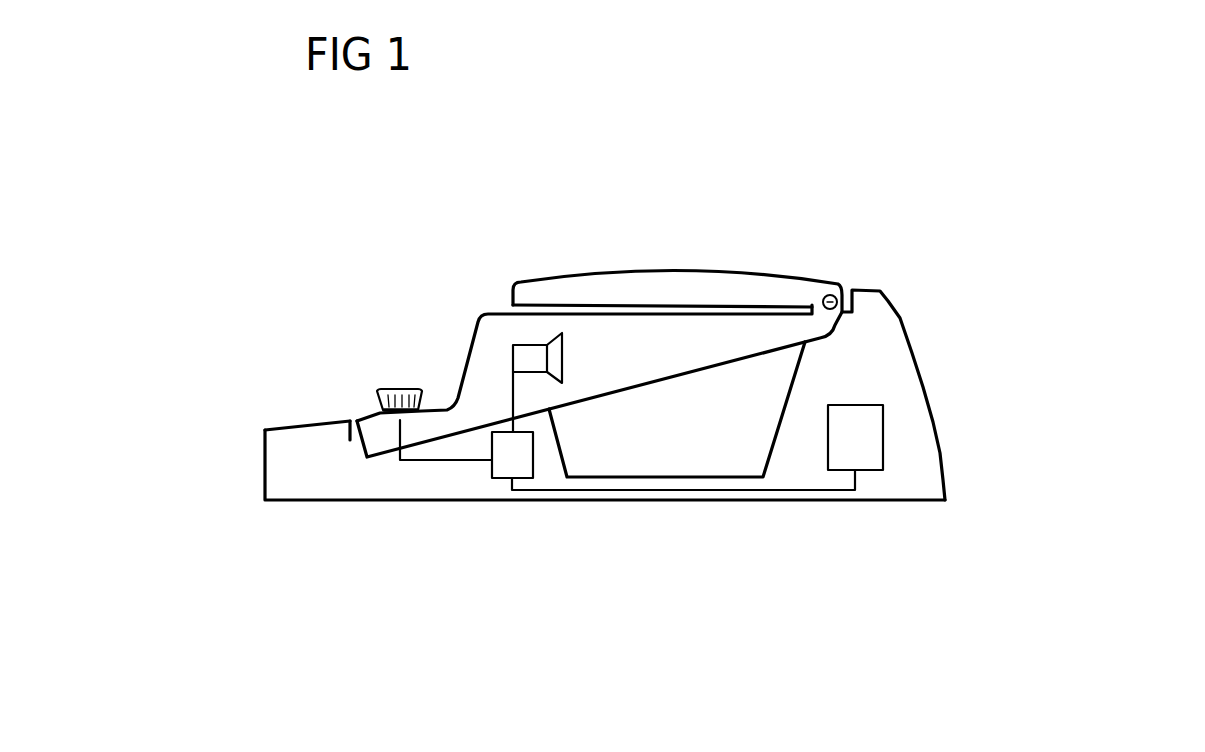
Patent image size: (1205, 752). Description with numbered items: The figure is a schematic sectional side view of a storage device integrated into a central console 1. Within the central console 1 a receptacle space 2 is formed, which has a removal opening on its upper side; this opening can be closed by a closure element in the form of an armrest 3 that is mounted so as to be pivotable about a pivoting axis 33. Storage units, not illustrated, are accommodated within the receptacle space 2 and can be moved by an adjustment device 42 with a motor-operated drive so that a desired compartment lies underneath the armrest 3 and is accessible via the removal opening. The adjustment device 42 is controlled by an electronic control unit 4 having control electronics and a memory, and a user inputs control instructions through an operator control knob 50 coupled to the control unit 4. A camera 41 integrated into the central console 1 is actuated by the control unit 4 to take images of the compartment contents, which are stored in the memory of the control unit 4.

The central console 1 is at (413, 492).
The receptacle space 2 is at (682, 468).
The armrest 3 is at (688, 287).
The control unit 4 is at (507, 463).
The pivoting axis 33 is at (837, 290).
The camera 41 is at (520, 357).
The adjustment device 42 is at (865, 425).
The operator control knob 50 is at (393, 388).